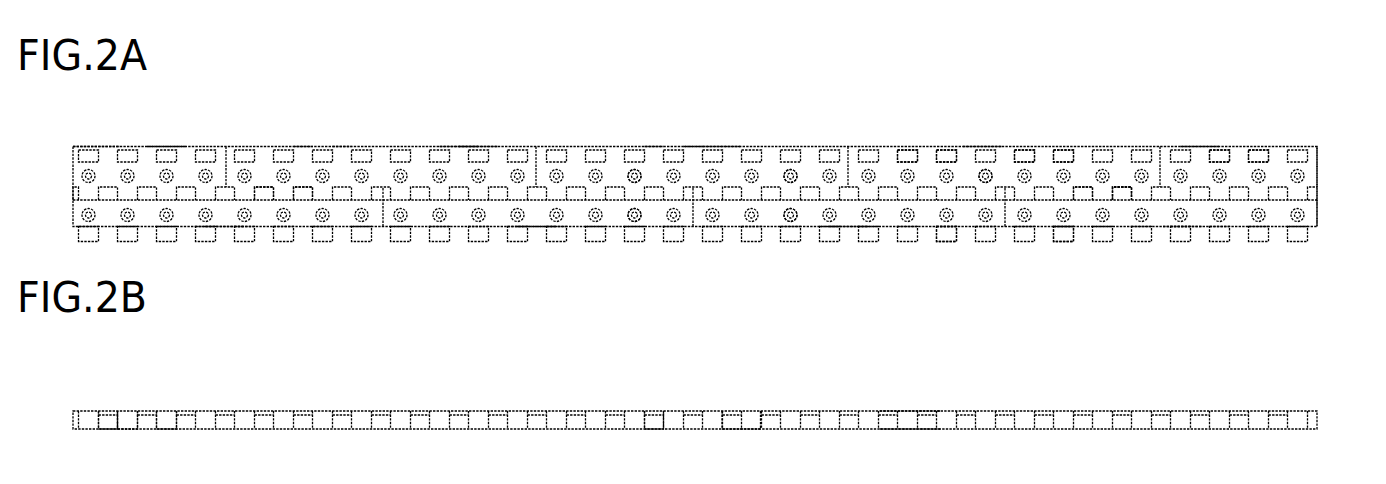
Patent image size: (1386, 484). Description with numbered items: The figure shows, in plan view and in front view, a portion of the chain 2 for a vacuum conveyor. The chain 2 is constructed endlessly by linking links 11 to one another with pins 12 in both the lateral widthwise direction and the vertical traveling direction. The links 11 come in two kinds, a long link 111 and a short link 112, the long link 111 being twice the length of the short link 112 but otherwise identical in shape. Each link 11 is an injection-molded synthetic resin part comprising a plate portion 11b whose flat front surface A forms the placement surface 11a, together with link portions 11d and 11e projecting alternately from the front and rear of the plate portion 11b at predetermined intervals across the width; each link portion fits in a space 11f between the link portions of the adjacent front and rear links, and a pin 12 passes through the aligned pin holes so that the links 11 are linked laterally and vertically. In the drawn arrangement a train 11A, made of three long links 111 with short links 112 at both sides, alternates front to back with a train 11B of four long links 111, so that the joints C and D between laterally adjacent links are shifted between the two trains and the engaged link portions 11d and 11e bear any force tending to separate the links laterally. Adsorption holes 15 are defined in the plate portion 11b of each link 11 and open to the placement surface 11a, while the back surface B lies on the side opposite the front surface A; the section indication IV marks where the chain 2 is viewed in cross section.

In FIG. 2A, the chain 2 is at (817, 100).
In FIG. 2B, the chain 2 is at (818, 400).
In FIG. 2B, the link 11 is at (745, 408).
In FIG. 2A, the placement surface 11a is at (612, 168).
In FIG. 2A, the plate portion 11b is at (775, 168).
In FIG. 2B, the plate portion 11b is at (653, 411).
In FIG. 2A, the link portion 11d is at (342, 147).
In FIG. 2A, the link portion 11e is at (306, 192).
In FIG. 2B, the link portion 11e is at (167, 411).
In FIG. 2A, the space 11f is at (942, 152).
In FIG. 2B, the space 11f is at (107, 411).
In FIG. 2A, the long link 111 is at (1190, 298).
In FIG. 2A, the short link 112 is at (1210, 88).
In FIG. 2A, the train 11A is at (1321, 162).
In FIG. 2A, the train 11B is at (1322, 210).
In FIG. 2A, the pin 12 is at (93, 147).
In FIG. 2A, the adsorption hole 15 is at (1063, 147).
In FIG. 2A, the front surface A is at (457, 152).
In FIG. 2B, the front surface A is at (913, 401).
In FIG. 2B, the back surface B is at (913, 435).
In FIG. 2A, the joint C is at (226, 146).
In FIG. 2A, the joint D is at (383, 226).
In FIG. 2A, the section line IV is at (1298, 145).